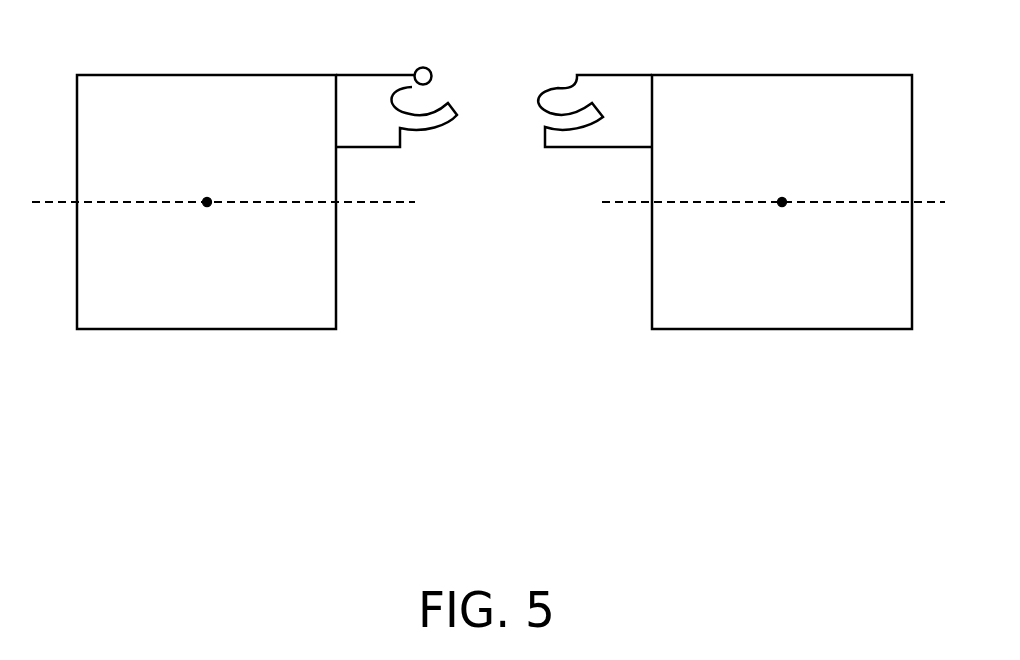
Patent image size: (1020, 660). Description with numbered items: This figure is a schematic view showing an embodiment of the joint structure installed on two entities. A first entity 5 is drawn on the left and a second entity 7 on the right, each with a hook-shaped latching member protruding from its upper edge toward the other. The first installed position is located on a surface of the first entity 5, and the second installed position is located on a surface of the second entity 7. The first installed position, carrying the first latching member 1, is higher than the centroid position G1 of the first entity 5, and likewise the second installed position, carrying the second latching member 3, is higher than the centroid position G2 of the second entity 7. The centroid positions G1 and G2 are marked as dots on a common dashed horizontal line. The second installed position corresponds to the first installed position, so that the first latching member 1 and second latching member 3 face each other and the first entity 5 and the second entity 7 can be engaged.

The first hook connecting portion 1 is at (360, 97).
The second hook connecting portion 3 is at (621, 100).
The first entity 5 is at (286, 105).
The second entity 7 is at (697, 100).
The centroid position G1 is at (207, 198).
The centroid position G2 is at (782, 198).